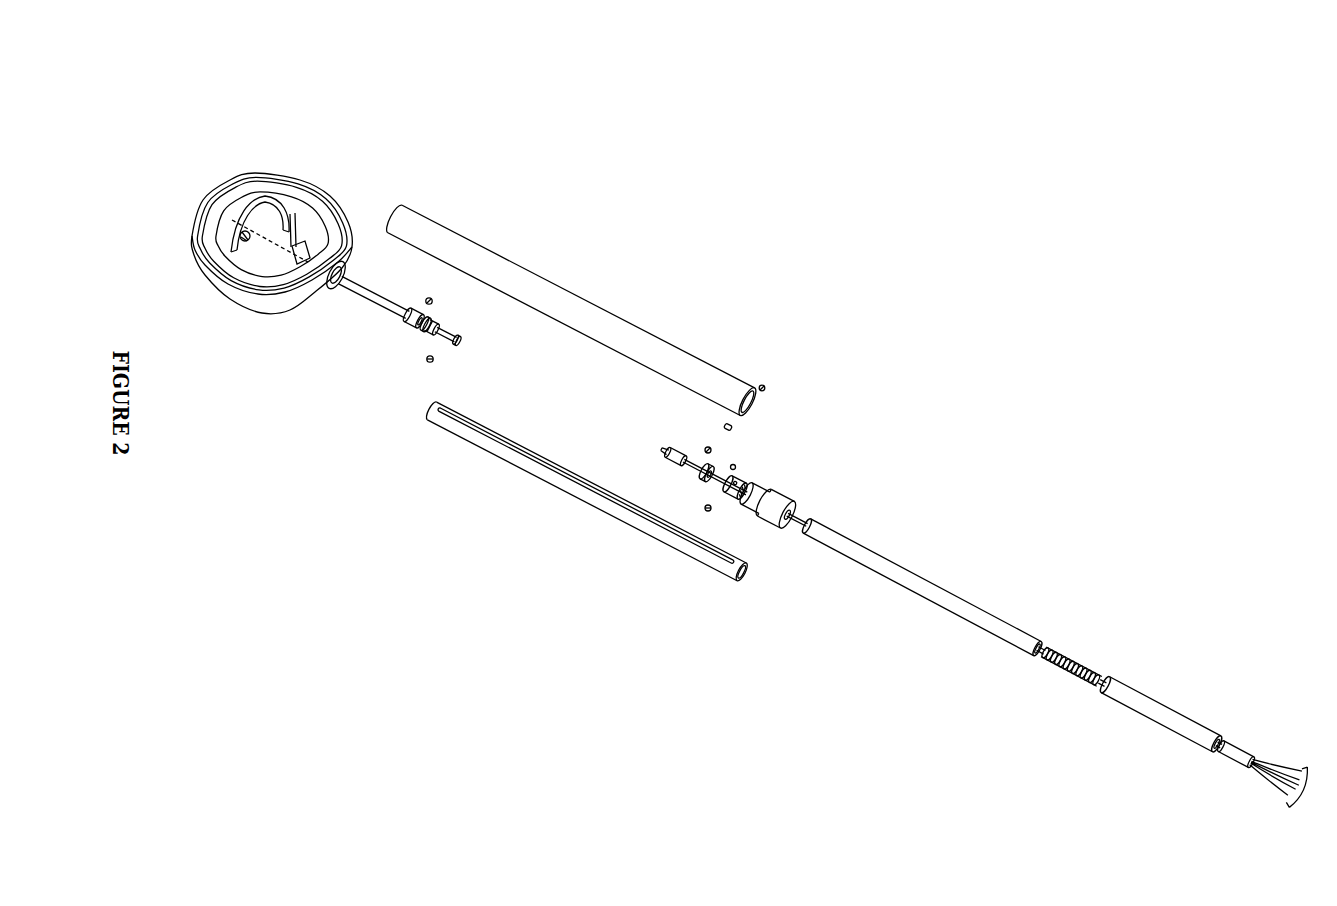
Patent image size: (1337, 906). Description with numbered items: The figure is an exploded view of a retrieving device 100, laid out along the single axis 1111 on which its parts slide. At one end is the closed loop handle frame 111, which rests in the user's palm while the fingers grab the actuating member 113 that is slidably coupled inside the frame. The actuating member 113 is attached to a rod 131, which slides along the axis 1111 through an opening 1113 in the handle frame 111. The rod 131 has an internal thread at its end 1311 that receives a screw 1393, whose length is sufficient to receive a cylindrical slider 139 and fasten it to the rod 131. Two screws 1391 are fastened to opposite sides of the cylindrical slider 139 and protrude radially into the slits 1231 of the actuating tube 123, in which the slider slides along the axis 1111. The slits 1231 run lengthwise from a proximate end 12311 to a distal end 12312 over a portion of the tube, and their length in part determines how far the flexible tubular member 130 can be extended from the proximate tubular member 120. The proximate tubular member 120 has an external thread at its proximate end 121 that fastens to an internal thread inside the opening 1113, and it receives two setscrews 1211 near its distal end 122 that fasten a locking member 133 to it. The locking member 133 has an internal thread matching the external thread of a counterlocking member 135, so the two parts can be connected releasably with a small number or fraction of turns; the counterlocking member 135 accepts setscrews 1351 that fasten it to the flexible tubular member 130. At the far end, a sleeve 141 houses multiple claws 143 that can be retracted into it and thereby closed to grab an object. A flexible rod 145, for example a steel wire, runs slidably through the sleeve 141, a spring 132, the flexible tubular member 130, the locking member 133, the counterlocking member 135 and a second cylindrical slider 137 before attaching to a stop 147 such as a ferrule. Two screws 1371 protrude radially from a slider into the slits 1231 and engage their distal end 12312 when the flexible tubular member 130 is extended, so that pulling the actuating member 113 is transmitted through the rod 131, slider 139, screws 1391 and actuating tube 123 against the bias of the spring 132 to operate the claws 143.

The retrieving device 100 is at (1048, 134).
The closed loop handle frame 111 is at (222, 272).
The axis 1111 is at (278, 247).
The opening 1113 is at (333, 290).
The actuating member 113 is at (243, 243).
The proximate tubular member 120 is at (631, 345).
The proximate end 121 is at (409, 192).
The setscrews 1211 is at (722, 425).
The distal end 122 is at (753, 373).
The actuating tube 123 is at (537, 475).
The slits 1231 is at (590, 487).
The proximate end 12311 is at (440, 420).
The distal end 12312 is at (730, 577).
The flexible tubular member 130 is at (963, 607).
The rod 131 is at (363, 283).
The end 1311 is at (405, 322).
The spring 132 is at (1087, 667).
The locking member 133 is at (790, 493).
The counterlocking member 135 is at (752, 484).
The setscrews 1351 is at (747, 478).
The cylindrical slider 137 is at (735, 466).
The screws 1371 is at (705, 505).
The cylindrical slider 139 is at (420, 335).
The screws 1391 is at (435, 305).
The screw 1393 is at (438, 338).
The sleeve 141 is at (1167, 713).
The claws 143 is at (1290, 748).
The flexible rod 145 is at (797, 517).
The stop 147 is at (683, 461).